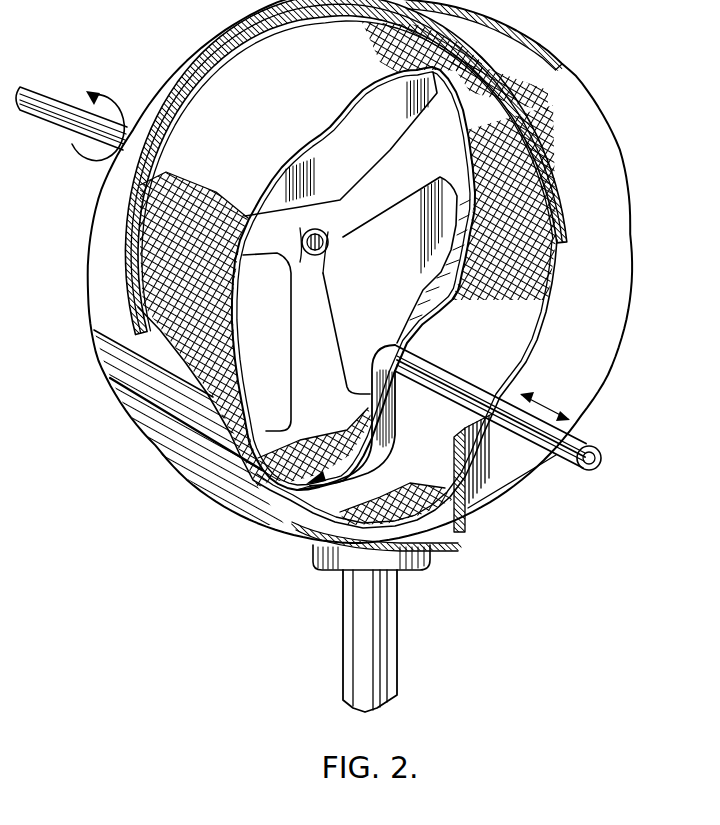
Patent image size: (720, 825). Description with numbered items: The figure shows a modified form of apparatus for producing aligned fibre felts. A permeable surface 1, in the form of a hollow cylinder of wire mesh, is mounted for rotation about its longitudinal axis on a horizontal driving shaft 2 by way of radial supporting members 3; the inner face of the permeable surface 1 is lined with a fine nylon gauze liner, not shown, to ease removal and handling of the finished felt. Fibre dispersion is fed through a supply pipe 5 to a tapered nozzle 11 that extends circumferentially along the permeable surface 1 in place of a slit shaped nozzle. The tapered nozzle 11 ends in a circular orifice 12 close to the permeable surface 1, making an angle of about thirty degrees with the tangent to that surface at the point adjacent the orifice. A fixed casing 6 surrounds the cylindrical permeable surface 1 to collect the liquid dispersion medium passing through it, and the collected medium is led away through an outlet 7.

The permeable surface 1 is at (143, 303).
The driving shaft 2 is at (36, 92).
The radial supporting members 3 is at (369, 198).
The supply pipe 5 is at (582, 443).
The casing 6 is at (100, 257).
The outlet 7 is at (367, 647).
The tapered nozzle 11 is at (380, 443).
The circular orifice 12 is at (327, 480).